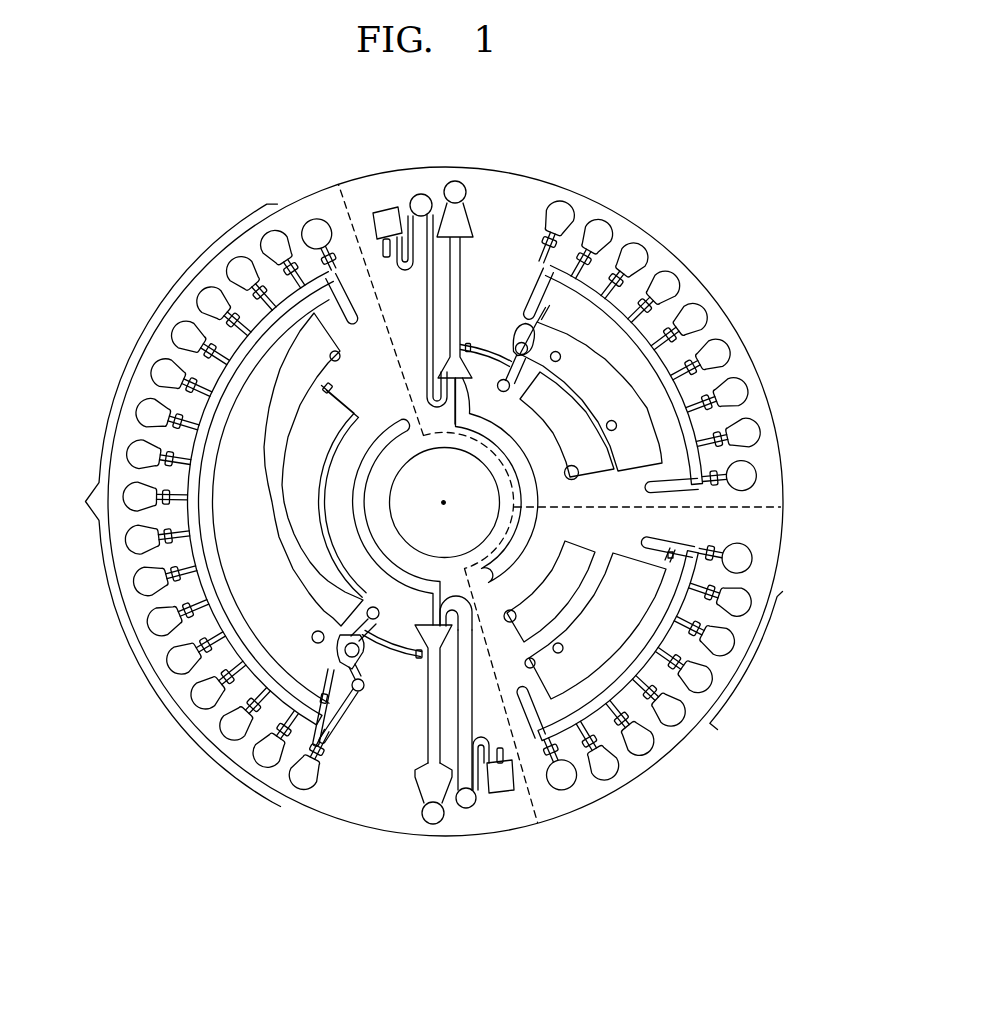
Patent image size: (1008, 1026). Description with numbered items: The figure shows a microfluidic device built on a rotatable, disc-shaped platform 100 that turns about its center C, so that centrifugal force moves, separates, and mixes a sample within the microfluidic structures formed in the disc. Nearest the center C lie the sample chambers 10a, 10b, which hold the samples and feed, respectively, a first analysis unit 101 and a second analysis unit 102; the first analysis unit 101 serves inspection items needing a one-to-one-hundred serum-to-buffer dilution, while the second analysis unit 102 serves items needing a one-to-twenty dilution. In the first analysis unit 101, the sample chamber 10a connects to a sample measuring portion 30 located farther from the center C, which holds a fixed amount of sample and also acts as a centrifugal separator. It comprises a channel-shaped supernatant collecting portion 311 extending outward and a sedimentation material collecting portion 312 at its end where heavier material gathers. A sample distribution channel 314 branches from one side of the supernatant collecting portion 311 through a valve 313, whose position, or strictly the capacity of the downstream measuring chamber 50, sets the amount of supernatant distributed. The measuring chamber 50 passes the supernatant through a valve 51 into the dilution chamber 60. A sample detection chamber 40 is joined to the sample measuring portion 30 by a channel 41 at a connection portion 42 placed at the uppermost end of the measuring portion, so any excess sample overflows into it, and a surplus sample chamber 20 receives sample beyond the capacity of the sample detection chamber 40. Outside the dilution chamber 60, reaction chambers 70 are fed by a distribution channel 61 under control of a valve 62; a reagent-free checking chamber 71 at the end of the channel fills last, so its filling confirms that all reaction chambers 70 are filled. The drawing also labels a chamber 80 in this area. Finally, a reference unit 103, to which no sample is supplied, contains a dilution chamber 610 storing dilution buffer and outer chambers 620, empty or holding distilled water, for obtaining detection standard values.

The platform 100 is at (670, 170).
The first analysis unit 101 is at (186, 770).
The second analysis unit 102 is at (670, 246).
The reference unit 103 is at (792, 577).
The sample chamber 10a is at (380, 450).
The sample chamber 10b is at (512, 442).
The center C is at (443, 506).
The surplus sample chamber 20 is at (500, 795).
The sample measuring portion 30 is at (430, 789).
The supernatant collecting portion 311 is at (432, 826).
The sedimentation material collecting portion 312 is at (448, 812).
The valve 313 is at (420, 660).
The sample distribution channel 314 is at (392, 654).
The sample detection chamber 40 is at (467, 810).
The channel 41 is at (458, 658).
The connection portion 42 is at (443, 613).
The measuring chamber 50 is at (354, 669).
The valve 51 is at (360, 700).
The dilution chamber 60 is at (255, 613).
The distribution channel 61 is at (340, 690).
The valve 62 is at (322, 670).
The reaction chambers 70 is at (202, 487).
The checking chamber 71 is at (312, 224).
The reaction chamber 80 is at (257, 757).
The dilution chamber 610 is at (558, 683).
The chambers 620 is at (658, 665).